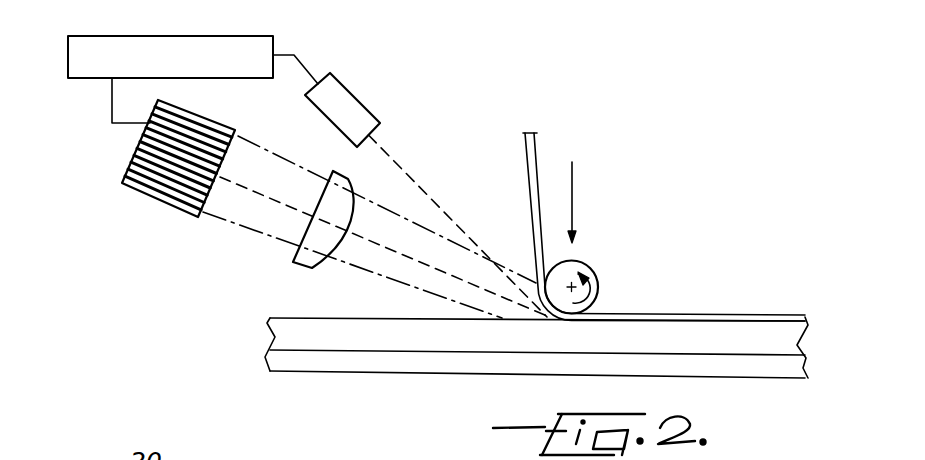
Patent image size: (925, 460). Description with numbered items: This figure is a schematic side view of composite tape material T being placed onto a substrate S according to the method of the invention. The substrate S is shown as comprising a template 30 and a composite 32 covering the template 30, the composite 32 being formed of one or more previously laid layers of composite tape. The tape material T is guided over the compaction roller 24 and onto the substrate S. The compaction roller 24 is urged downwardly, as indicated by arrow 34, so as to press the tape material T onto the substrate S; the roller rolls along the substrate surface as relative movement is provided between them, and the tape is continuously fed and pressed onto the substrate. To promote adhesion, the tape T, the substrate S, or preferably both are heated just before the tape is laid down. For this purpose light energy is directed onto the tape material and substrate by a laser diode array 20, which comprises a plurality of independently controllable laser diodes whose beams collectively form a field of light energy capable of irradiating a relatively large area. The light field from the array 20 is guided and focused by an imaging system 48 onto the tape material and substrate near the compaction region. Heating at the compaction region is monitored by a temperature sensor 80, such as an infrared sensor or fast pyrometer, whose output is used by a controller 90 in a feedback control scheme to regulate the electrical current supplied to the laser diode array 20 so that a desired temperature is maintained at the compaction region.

The controller 90 is at (257, 36).
The temperature sensor 80 is at (357, 104).
The laser diode array 20 is at (170, 213).
The imaging system 48 is at (305, 238).
The composite tape material T is at (537, 143).
The arrow 34 is at (573, 189).
The compaction roller 24 is at (597, 272).
The substrate S is at (262, 331).
The template 30 is at (343, 362).
The composite 32 is at (463, 340).